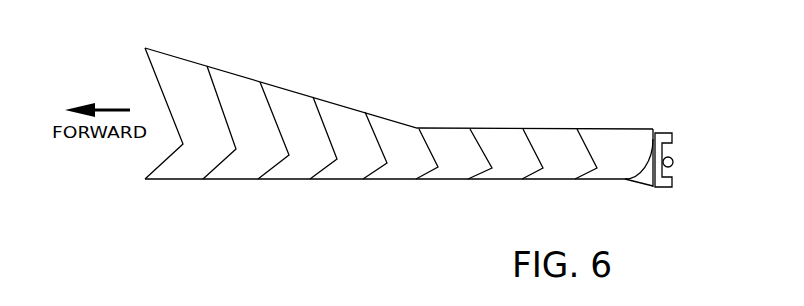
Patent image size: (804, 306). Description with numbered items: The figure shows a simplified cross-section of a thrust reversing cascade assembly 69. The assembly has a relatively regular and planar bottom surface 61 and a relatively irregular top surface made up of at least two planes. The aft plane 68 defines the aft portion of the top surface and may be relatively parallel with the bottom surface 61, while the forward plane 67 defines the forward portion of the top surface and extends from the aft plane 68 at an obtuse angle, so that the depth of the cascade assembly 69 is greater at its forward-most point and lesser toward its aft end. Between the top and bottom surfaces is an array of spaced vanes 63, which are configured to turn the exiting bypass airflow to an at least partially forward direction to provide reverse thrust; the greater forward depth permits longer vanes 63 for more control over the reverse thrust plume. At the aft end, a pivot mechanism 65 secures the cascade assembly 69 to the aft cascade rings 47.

The cascade assembly 69 is at (619, 46).
The bottom surface 61 is at (340, 188).
The spaced vanes 63 is at (226, 171).
The forward plane 67 is at (407, 110).
The aft plane 68 is at (653, 107).
The aft cascade rings 47 is at (668, 125).
The pivot mechanism 65 is at (675, 176).